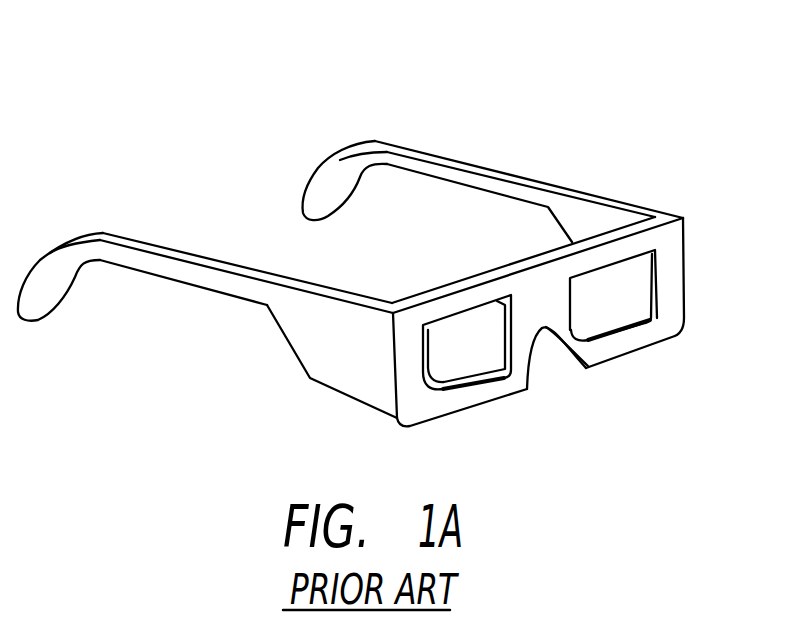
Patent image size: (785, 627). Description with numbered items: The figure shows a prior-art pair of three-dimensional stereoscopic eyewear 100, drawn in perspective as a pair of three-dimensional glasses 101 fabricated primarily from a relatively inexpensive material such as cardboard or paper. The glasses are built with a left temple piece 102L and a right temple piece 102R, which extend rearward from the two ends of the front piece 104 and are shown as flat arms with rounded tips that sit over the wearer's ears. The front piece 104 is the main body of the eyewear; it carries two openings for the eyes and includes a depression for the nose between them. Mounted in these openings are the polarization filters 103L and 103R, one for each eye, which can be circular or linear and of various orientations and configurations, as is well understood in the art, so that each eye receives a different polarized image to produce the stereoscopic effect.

The 3D glasses (prior art) 100 is at (388, 240).
The pair of 3-D glasses 101 is at (512, 259).
The left temple piece 102L is at (580, 220).
The right temple piece 102R is at (335, 347).
The left polarization filter 103L is at (625, 297).
The right polarization filter 103R is at (457, 360).
The front piece 104 is at (542, 357).